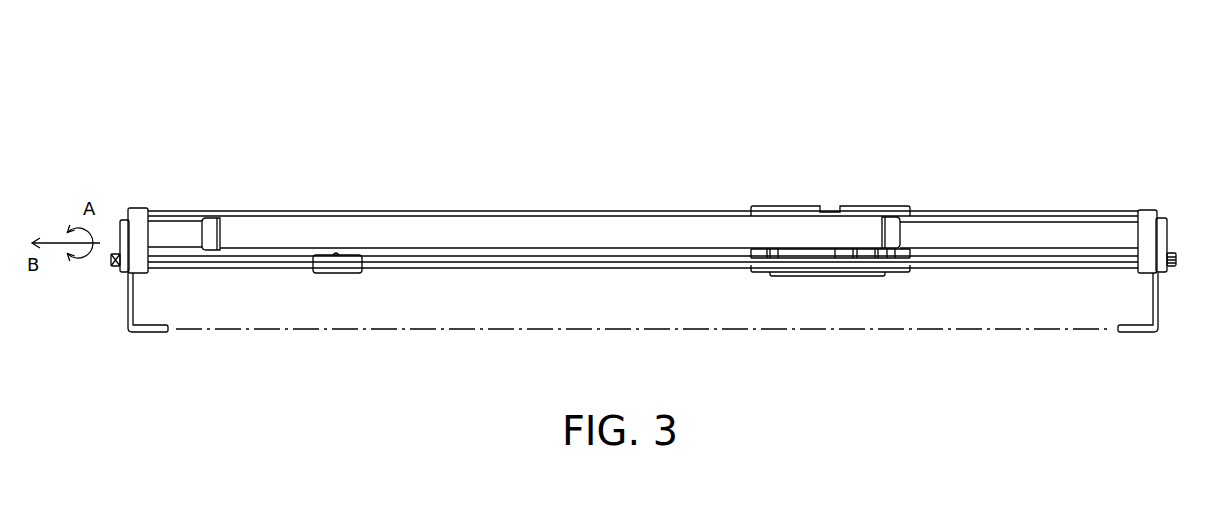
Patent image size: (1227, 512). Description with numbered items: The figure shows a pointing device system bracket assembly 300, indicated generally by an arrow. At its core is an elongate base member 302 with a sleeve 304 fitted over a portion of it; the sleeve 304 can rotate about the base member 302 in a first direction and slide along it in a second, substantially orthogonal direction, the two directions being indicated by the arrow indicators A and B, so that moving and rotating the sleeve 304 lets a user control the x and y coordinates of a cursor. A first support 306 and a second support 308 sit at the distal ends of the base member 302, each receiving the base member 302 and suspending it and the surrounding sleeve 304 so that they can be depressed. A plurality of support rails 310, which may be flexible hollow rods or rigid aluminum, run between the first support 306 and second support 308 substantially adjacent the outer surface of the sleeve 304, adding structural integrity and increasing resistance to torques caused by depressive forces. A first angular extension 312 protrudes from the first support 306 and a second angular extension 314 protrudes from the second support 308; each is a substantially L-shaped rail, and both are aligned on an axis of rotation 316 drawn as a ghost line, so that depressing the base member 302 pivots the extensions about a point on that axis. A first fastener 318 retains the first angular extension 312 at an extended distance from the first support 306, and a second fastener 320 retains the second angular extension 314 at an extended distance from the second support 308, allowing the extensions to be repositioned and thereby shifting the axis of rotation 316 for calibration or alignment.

The bracket assembly 300 is at (328, 117).
The elongate base member 302 is at (975, 237).
The sleeve 304 is at (555, 222).
The first support 306 is at (140, 208).
The second support 308 is at (1152, 210).
The support rails 310 is at (1052, 212).
The first angular extension 312 is at (143, 334).
The second angular extension 314 is at (1137, 334).
The axis of rotation 316 is at (432, 332).
The first fastener 318 is at (110, 262).
The second fastener 320 is at (1178, 258).